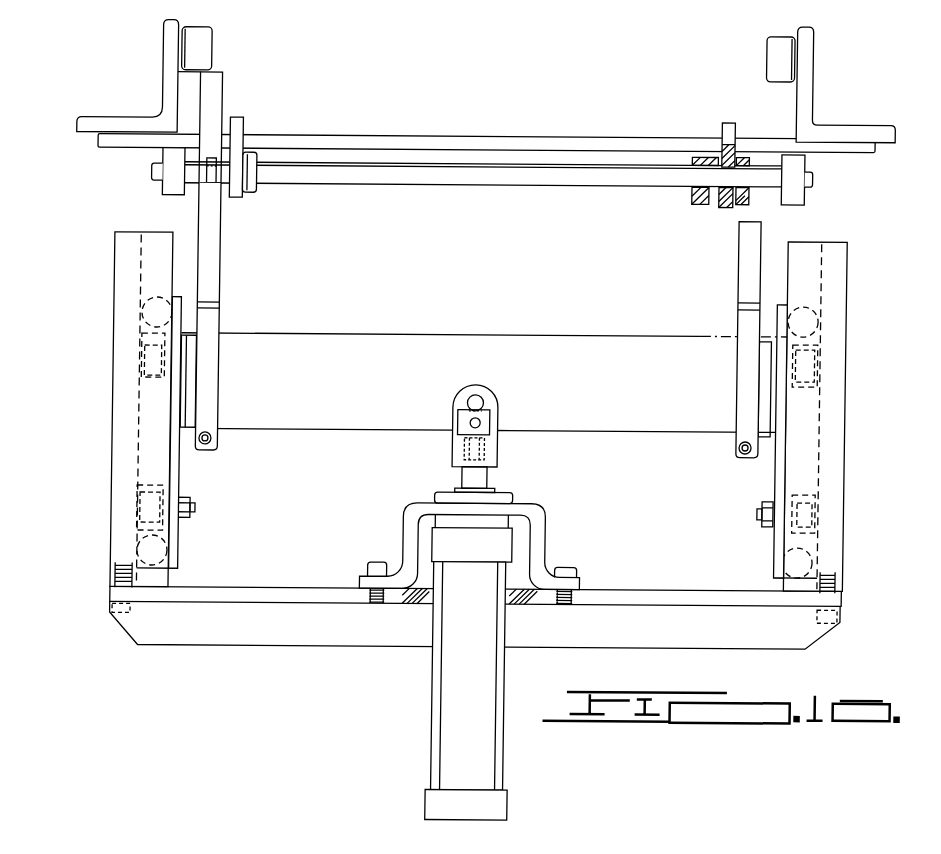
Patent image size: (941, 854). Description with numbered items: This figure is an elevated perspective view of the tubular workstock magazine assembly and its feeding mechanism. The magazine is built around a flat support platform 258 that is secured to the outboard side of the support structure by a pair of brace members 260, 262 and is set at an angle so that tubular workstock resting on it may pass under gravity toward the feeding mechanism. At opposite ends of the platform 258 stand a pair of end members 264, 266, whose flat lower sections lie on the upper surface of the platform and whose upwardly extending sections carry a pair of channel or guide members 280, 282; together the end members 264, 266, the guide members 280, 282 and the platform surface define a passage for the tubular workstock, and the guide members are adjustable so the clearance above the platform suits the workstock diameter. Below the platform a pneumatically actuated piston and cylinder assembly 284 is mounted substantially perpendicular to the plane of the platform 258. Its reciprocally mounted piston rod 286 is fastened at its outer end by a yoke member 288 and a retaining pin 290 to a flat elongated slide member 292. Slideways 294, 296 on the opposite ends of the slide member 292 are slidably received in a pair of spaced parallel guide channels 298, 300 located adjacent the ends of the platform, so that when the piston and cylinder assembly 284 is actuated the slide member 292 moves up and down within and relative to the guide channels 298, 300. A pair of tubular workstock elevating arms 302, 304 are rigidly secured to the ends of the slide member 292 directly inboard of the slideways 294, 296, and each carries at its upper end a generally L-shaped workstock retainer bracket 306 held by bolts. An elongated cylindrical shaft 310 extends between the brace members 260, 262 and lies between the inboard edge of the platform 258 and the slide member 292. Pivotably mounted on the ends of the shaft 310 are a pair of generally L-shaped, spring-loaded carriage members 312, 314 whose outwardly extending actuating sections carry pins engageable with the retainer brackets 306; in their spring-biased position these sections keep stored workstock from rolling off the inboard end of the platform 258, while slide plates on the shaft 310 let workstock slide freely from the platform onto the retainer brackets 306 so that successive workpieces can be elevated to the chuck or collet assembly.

The support platform 258 is at (443, 133).
The brace member 260 is at (157, 199).
The brace member 262 is at (807, 198).
The end member 264 is at (156, 85).
The end member 266 is at (813, 90).
The guide member 280 is at (207, 50).
The guide member 282 is at (758, 58).
The piston and cylinder assembly 284 is at (434, 712).
The piston rod 286 is at (481, 480).
The yoke member 288 is at (453, 450).
The retaining pin 290 is at (467, 400).
The slide member 292 is at (489, 330).
The slideway 294 is at (184, 299).
The slideway 296 is at (776, 316).
The guide channel 298 is at (113, 273).
The guide channel 300 is at (846, 306).
The elevating arm 302 is at (223, 257).
The elevating arm 304 is at (735, 280).
The workstock retainer bracket 306 is at (220, 90).
The shaft 310 is at (464, 185).
The carriage member 312 is at (239, 124).
The carriage member 314 is at (716, 126).